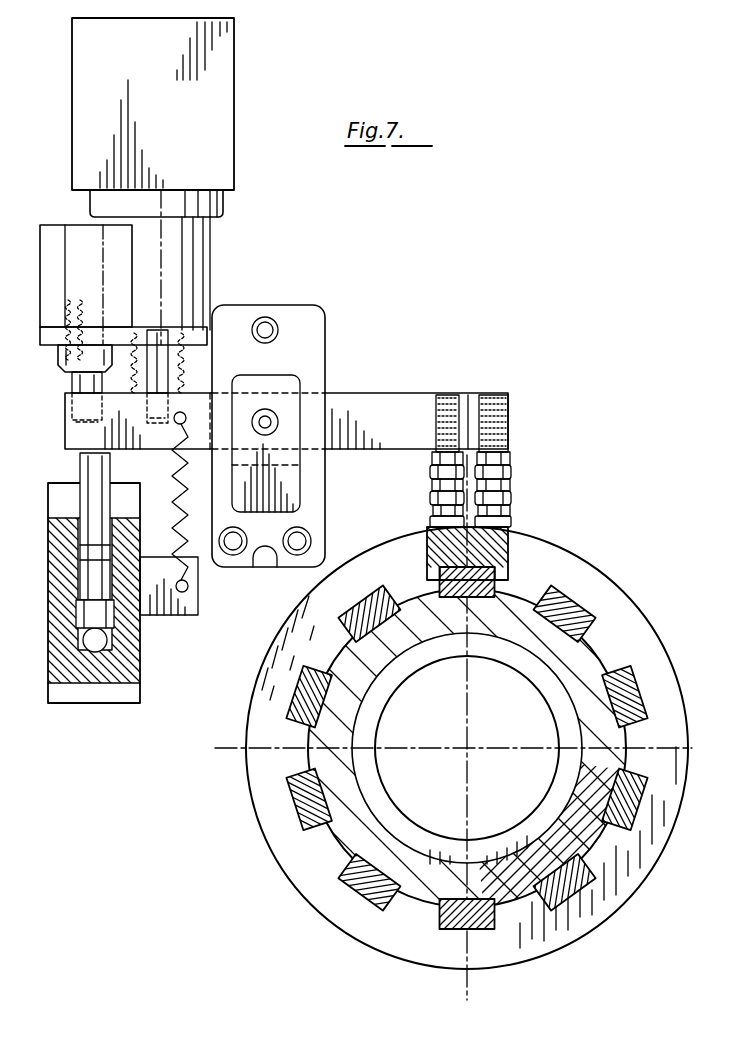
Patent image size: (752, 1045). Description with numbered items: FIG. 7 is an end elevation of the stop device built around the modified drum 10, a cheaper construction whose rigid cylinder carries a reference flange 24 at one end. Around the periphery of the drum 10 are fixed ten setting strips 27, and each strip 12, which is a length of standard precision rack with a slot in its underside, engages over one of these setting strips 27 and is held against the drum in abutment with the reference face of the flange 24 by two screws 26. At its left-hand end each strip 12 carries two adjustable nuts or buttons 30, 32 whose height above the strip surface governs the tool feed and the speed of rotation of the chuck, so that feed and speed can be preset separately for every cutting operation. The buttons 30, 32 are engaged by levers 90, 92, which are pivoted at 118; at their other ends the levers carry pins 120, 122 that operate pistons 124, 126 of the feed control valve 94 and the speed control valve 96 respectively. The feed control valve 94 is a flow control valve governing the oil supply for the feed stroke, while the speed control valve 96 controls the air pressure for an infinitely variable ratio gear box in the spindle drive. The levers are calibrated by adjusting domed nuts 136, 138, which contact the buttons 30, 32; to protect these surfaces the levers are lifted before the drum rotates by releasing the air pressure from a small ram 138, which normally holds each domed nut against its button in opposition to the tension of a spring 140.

The drum 10 is at (446, 642).
The strip 12 is at (490, 550).
The reference flange 24 is at (695, 606).
The screws 26 is at (563, 662).
The setting strips 27 is at (567, 605).
The adjustable nut or button 30 is at (500, 498).
The adjustable nut or button 32 is at (435, 498).
The lever 90 is at (503, 397).
The lever 92 is at (424, 402).
The feed control valve 94 is at (172, 275).
The speed control valve 96 is at (108, 254).
The pivot 118 is at (276, 415).
The pin 120 is at (157, 377).
The pin 122 is at (144, 404).
The piston 124 is at (203, 330).
The piston 126 is at (93, 355).
The domed nut 136 is at (569, 465).
The domed nut 138 is at (435, 467).
The spring 140 is at (177, 530).